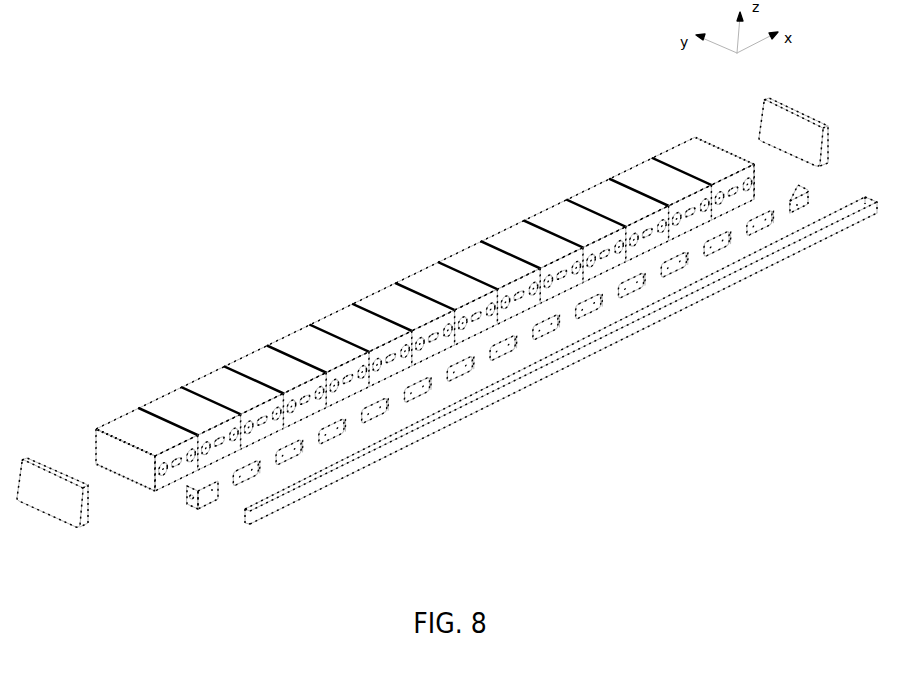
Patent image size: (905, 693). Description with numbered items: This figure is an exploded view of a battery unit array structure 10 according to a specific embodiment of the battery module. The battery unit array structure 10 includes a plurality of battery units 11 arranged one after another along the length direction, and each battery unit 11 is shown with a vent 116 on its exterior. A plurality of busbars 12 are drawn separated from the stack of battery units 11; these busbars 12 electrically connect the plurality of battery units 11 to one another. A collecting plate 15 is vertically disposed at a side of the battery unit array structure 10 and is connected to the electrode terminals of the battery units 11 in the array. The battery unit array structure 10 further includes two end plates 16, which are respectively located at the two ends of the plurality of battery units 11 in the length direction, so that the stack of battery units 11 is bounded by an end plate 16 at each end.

The battery unit array structure 10 is at (462, 36).
The battery unit 11 is at (425, 297).
The vent 116 is at (457, 296).
The busbar 12 is at (511, 371).
The collecting plate 15 is at (590, 348).
The end plate 16 is at (422, 289).